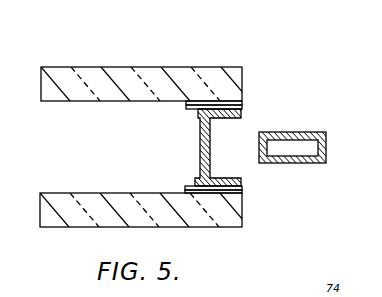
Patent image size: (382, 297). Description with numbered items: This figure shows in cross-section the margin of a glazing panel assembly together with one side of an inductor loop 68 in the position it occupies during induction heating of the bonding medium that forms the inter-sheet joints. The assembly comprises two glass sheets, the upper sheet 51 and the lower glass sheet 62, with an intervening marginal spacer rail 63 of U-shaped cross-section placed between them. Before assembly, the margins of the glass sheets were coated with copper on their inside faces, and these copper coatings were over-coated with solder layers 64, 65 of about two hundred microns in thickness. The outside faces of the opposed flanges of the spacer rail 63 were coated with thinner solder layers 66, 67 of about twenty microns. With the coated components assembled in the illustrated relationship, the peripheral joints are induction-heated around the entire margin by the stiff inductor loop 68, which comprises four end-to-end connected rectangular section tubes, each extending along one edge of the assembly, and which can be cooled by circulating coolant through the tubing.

The upper plate 51 is at (108, 78).
The glass sheet 62 is at (185, 215).
The marginal spacer rail 63 is at (211, 143).
The solder layer 64 is at (243, 101).
The solder layer 65 is at (243, 192).
The solder layer 66 is at (198, 110).
The solder layer 67 is at (196, 183).
The inductor loop 68 is at (297, 132).